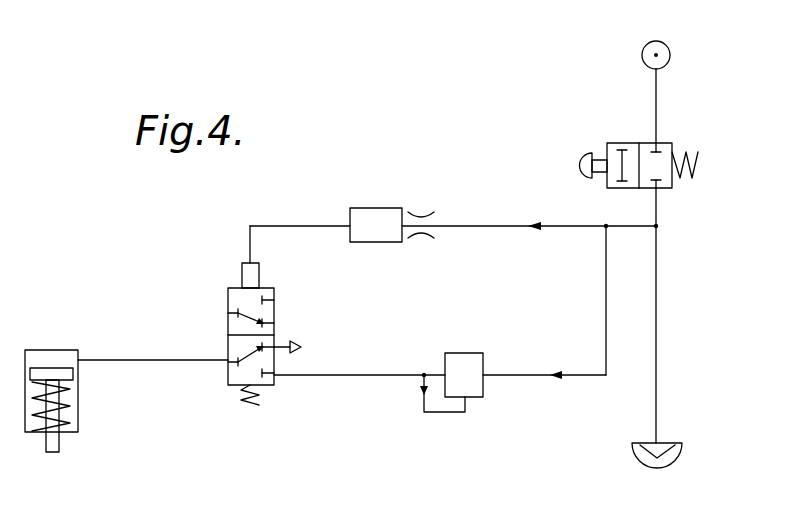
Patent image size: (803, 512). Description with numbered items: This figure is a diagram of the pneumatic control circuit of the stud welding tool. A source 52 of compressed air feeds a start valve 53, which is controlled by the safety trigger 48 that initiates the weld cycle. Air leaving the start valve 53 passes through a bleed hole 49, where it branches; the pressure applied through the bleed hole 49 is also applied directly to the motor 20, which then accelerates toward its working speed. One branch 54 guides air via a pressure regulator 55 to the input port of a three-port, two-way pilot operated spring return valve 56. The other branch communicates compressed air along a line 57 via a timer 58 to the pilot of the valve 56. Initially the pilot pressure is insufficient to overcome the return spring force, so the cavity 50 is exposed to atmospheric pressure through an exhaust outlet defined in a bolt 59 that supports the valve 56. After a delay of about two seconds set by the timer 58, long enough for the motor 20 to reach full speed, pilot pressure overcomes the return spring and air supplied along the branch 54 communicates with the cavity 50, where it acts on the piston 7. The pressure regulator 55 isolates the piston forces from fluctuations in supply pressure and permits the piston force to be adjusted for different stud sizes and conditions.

The source of compressed air 52 is at (672, 54).
The start valve 53 is at (670, 190).
The safety trigger 48 is at (581, 156).
The bleed hole 49 is at (611, 220).
The line 57 is at (473, 224).
The timer 58 is at (385, 247).
The 3-port, 2-way pilot operated spring return valve 56 is at (275, 331).
The bolt 59 is at (296, 352).
The pressure regulator 55 is at (465, 360).
The branch 54 is at (520, 378).
The cavity 50 is at (50, 357).
The piston 7 is at (75, 376).
The motor 20 is at (670, 460).